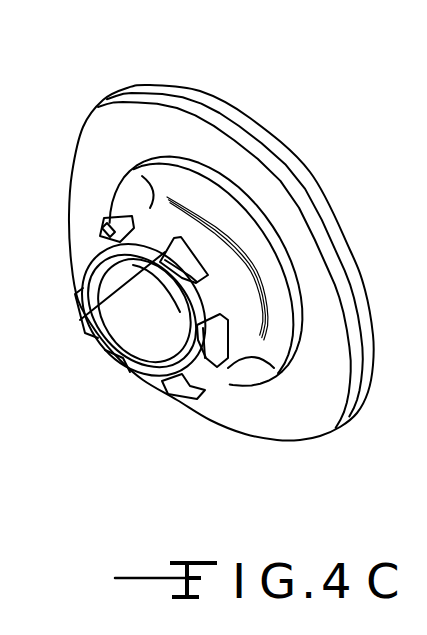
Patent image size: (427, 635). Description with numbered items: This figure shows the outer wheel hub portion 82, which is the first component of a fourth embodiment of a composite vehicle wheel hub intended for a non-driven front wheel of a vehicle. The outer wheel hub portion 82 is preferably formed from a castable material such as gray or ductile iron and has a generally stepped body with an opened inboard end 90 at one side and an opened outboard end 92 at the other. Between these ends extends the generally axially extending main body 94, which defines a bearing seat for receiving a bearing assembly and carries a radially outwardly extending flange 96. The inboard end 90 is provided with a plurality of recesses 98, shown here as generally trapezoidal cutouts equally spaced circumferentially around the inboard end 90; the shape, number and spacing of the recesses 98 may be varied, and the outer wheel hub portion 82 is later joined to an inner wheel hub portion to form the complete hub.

The outer wheel hub portion 82 is at (208, 255).
The inboard end 90 is at (118, 346).
The outboard end 92 is at (328, 183).
The main body 94 is at (140, 207).
The flange 96 is at (320, 395).
The recesses 98 is at (100, 229).